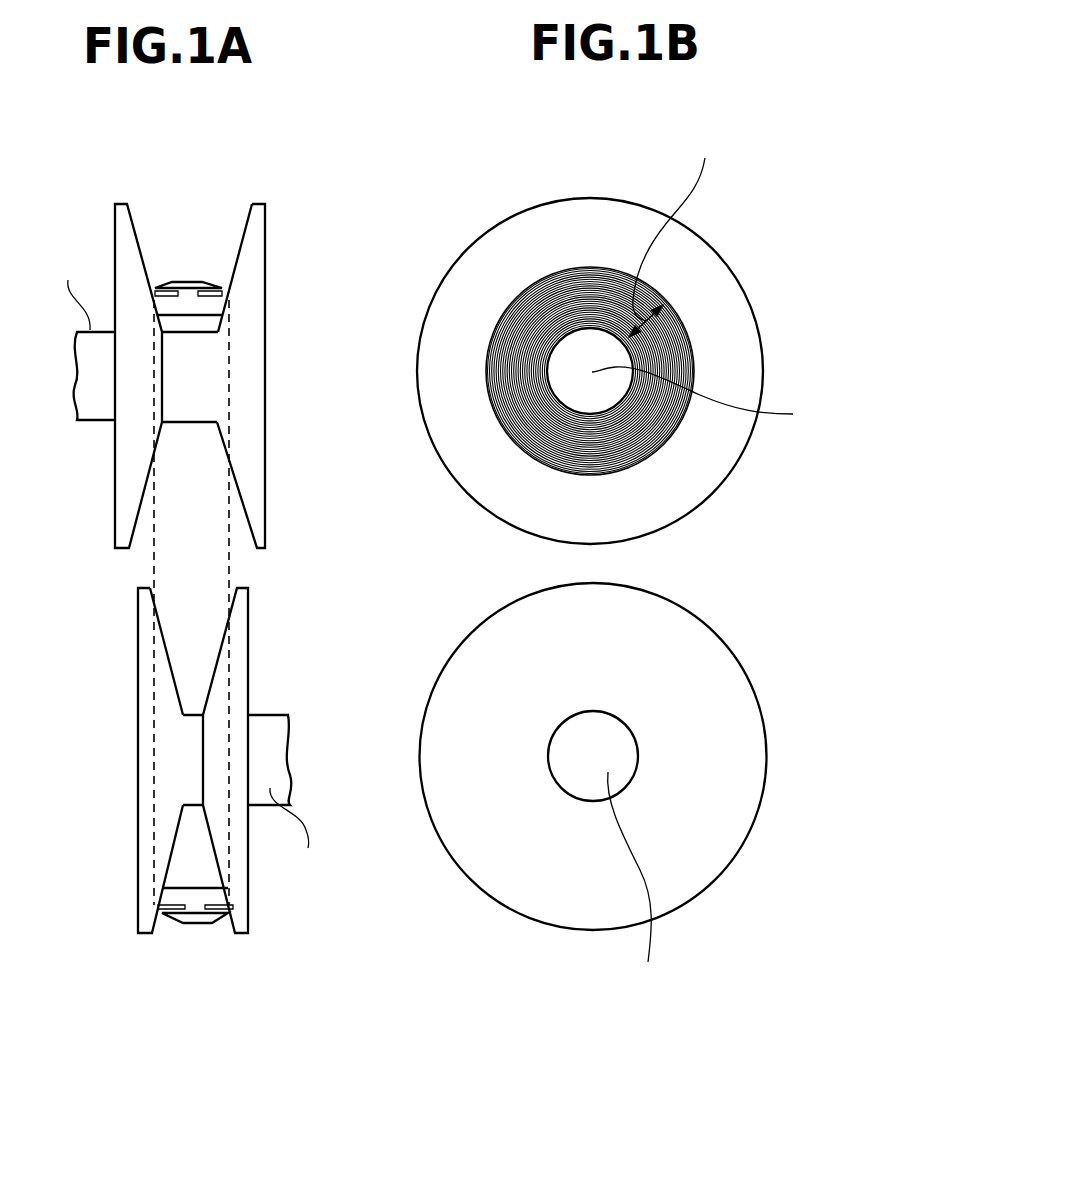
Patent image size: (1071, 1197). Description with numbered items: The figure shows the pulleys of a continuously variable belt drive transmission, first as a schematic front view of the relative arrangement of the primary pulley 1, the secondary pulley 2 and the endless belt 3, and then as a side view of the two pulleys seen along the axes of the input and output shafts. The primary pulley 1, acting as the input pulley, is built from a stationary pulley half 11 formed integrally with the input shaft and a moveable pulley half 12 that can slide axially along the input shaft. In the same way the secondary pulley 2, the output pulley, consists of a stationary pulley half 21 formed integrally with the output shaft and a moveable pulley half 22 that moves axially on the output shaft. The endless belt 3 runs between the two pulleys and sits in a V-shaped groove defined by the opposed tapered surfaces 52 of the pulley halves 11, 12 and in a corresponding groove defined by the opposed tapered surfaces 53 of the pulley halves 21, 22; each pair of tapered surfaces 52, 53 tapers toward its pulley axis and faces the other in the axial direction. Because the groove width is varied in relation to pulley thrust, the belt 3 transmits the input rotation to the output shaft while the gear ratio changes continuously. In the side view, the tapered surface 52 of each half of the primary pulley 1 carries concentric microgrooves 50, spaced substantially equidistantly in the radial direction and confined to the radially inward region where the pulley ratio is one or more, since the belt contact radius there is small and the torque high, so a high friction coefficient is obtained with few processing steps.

In FIG. 1A, the primary pulley 1 is at (190, 516).
In FIG. 1B, the primary pulley 1 is at (644, 325).
In FIG. 1A, the secondary pulley 2 is at (204, 750).
In FIG. 1B, the secondary pulley 2 is at (660, 798).
In FIG. 1A, the endless belt 3 is at (190, 264).
In FIG. 1A, the stationary pulley half 11 is at (257, 200).
In FIG. 1B, the stationary pulley half 11 is at (625, 369).
In FIG. 1A, the moveable pulley half 12 is at (116, 203).
In FIG. 1B, the moveable pulley half 12 is at (727, 258).
In FIG. 1A, the stationary pulley half 21 is at (138, 650).
In FIG. 1B, the stationary pulley half 21 is at (660, 756).
In FIG. 1A, the moveable pulley half 22 is at (248, 633).
In FIG. 1B, the moveable pulley half 22 is at (762, 713).
In FIG. 1B, the concentric microgrooves 50 is at (683, 350).
In FIG. 1A, the tapered surfaces 52 is at (133, 222).
In FIG. 1B, the tapered surfaces 52 is at (735, 308).
In FIG. 1A, the tapered surfaces 53 is at (152, 590).
In FIG. 1B, the tapered surfaces 53 is at (743, 778).